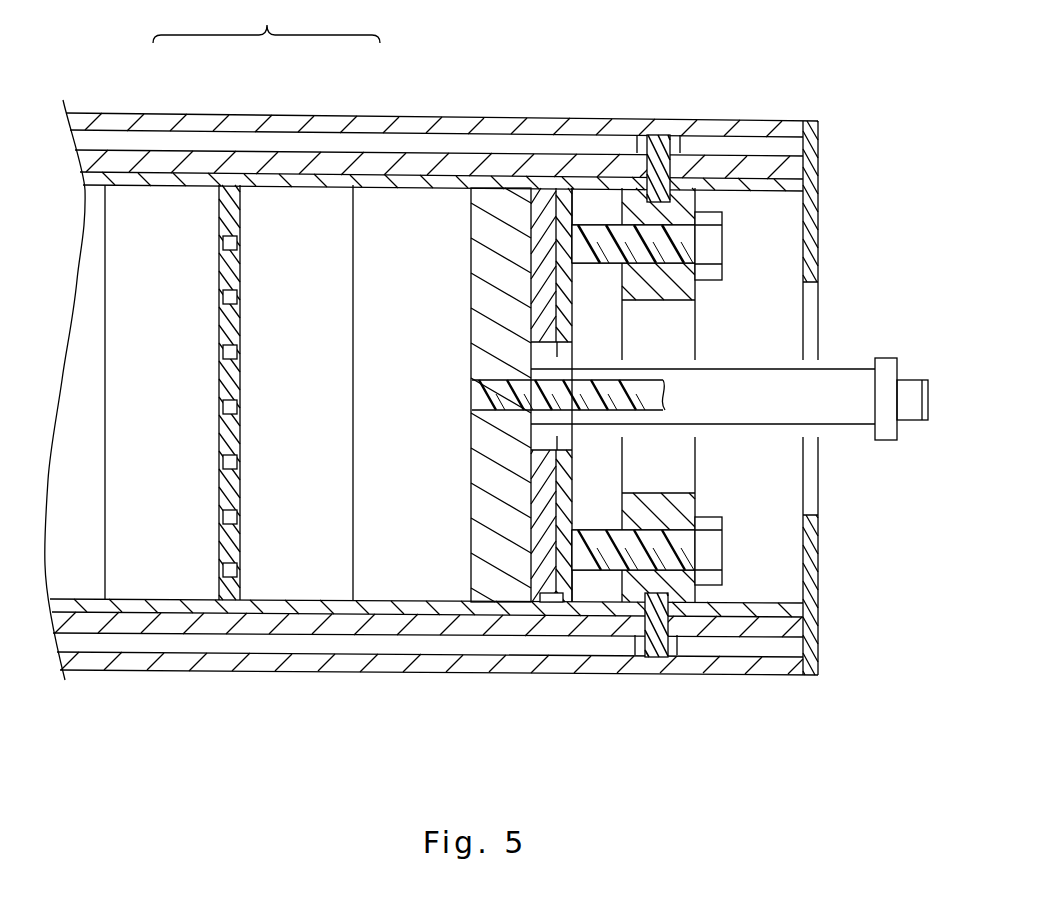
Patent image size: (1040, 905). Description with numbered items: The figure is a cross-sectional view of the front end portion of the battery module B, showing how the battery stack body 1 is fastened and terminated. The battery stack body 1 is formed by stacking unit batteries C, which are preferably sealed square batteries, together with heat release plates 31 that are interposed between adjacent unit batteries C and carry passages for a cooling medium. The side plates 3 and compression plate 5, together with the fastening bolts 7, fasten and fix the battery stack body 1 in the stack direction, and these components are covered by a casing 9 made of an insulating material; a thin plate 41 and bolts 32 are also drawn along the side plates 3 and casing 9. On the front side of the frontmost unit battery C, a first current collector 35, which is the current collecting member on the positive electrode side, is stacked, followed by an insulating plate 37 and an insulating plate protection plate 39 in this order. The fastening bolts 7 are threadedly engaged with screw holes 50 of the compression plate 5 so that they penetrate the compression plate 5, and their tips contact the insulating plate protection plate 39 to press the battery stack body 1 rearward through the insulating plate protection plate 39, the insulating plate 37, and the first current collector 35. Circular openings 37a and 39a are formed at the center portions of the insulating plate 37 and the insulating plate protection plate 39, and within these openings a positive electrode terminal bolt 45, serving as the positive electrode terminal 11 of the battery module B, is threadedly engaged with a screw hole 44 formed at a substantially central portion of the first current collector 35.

The battery stack body 1 is at (266, 21).
The unit battery C is at (157, 200).
The battery module B is at (197, 669).
The heat release plate 31 is at (223, 200).
The first current collector 35 is at (498, 590).
The insulating plate 37 is at (540, 593).
The insulating plate protection plate 39 is at (562, 593).
The circular opening 37a is at (543, 443).
The circular opening 39a is at (565, 350).
The screw hole 44 is at (512, 398).
The positive electrode terminal bolt 45 is at (518, 388).
The positive electrode terminal 11 is at (917, 400).
The compression plate 5 is at (683, 507).
The screw hole 50 is at (697, 253).
The fastening bolt 7 is at (722, 233).
The bolt 32 is at (657, 650).
The inner plate 41 is at (795, 612).
The side plate 3 is at (793, 628).
The casing 9 is at (808, 655).